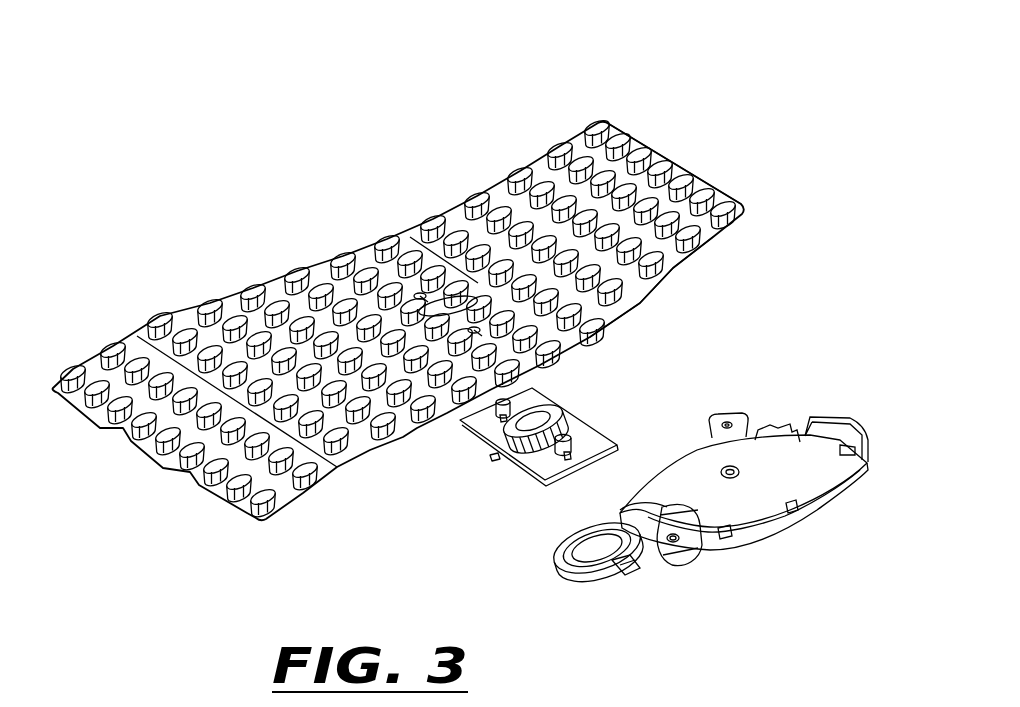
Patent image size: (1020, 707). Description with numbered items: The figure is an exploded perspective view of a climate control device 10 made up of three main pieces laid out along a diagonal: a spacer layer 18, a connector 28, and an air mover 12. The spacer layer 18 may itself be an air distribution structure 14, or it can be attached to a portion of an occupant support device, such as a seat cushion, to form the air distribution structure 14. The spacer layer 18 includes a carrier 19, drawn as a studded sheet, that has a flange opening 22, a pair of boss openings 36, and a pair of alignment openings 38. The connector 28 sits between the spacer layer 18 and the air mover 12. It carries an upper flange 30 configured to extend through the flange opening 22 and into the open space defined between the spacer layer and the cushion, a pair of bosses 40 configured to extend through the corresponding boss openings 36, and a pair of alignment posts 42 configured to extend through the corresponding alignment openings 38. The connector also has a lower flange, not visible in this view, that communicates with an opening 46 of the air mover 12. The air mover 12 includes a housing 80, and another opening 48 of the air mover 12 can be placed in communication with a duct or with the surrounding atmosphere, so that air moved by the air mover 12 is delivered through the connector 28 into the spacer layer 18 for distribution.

The climate control device 10 is at (403, 55).
The air mover 12 is at (757, 553).
The air distribution structure 14 is at (722, 245).
The spacer layer 18 is at (634, 308).
The carrier 19 is at (682, 268).
The flange opening 22 is at (452, 298).
The connector 28 is at (522, 472).
The upper flange 30 is at (541, 409).
The boss openings 36 is at (475, 328).
The alignment openings 38 is at (410, 294).
The bosses 40 is at (518, 401).
The alignment posts 42 is at (500, 418).
The opening 46 is at (555, 565).
The opening 48 is at (835, 420).
The housing 80 is at (610, 580).